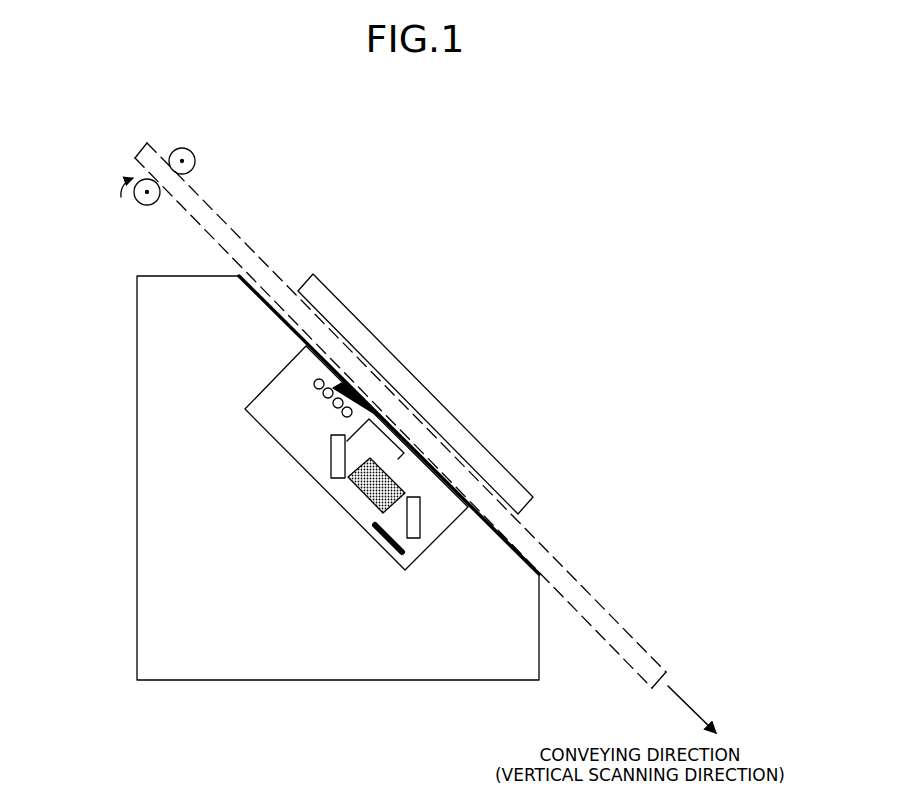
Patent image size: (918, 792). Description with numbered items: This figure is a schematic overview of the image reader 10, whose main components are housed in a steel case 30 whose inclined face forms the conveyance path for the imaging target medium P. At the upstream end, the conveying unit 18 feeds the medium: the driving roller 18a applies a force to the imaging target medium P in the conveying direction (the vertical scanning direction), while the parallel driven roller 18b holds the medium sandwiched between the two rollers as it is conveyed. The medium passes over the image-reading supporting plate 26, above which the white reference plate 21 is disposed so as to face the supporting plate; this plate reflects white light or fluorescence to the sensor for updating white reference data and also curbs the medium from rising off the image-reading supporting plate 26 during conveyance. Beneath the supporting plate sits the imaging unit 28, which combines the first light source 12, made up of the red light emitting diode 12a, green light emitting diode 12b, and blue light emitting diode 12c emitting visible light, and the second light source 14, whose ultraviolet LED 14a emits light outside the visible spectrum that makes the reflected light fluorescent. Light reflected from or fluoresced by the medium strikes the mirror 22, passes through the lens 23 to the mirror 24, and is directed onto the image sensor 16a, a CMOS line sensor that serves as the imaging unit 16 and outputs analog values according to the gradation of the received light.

The image reader 10 is at (556, 199).
The first light source 12 is at (268, 423).
The red light emitting diode (RLED) 12a is at (314, 383).
The green light emitting diode (GLED) 12b is at (324, 396).
The blue light emitting diode (BLED) 12c is at (342, 415).
The second light source 14 is at (326, 458).
The ultraviolet LED (UVLED) 14a is at (297, 461).
The imaging unit 16 is at (332, 553).
The image sensor 16a is at (380, 538).
The conveying unit 18 is at (161, 184).
The driving roller 18a is at (137, 203).
The driven roller 18b is at (195, 157).
The white reference plate 21 is at (432, 392).
The mirror 22 is at (335, 479).
The lens 23 is at (353, 490).
The mirror 24 is at (421, 530).
The image-reading supporting plate 26 is at (403, 453).
The imaging unit 28 is at (397, 567).
The steel case 30 is at (137, 575).
The imaging target medium P is at (137, 150).